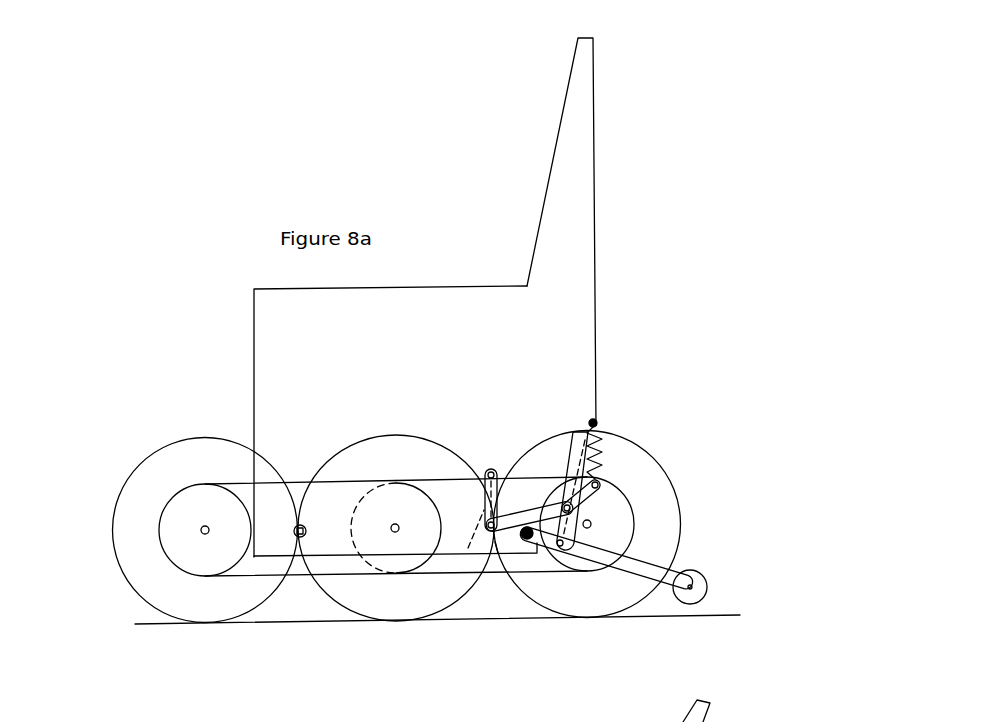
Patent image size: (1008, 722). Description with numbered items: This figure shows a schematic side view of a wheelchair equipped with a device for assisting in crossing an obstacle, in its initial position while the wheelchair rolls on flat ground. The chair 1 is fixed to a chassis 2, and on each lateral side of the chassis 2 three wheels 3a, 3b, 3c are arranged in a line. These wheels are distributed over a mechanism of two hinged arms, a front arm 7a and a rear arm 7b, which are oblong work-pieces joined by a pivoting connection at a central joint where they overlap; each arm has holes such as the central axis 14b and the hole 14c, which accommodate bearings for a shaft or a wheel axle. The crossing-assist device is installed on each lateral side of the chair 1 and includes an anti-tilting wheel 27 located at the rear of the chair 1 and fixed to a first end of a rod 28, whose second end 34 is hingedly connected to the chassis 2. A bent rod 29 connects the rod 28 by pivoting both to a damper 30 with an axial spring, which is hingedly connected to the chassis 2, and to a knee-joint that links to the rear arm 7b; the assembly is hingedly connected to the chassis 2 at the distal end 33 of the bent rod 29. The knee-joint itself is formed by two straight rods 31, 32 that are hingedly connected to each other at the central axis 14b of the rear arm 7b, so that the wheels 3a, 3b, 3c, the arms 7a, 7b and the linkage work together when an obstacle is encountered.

The chair 1 is at (445, 193).
The chassis 2 is at (243, 360).
The wheel 3a is at (132, 595).
The wheel 3b is at (340, 608).
The wheel 3c is at (648, 592).
The front arm 7a is at (200, 578).
The rear arm 7b is at (593, 573).
The central axis 14b is at (301, 545).
The hole 14c is at (395, 537).
The anti-tilting wheel 27 is at (703, 580).
The rod 28 is at (650, 560).
The bent rod 29 is at (592, 500).
The damper 30 is at (598, 458).
The straight rod 31 is at (532, 507).
The straight rod 32 is at (483, 500).
The distal end 33 is at (490, 468).
The second end 34 is at (527, 537).